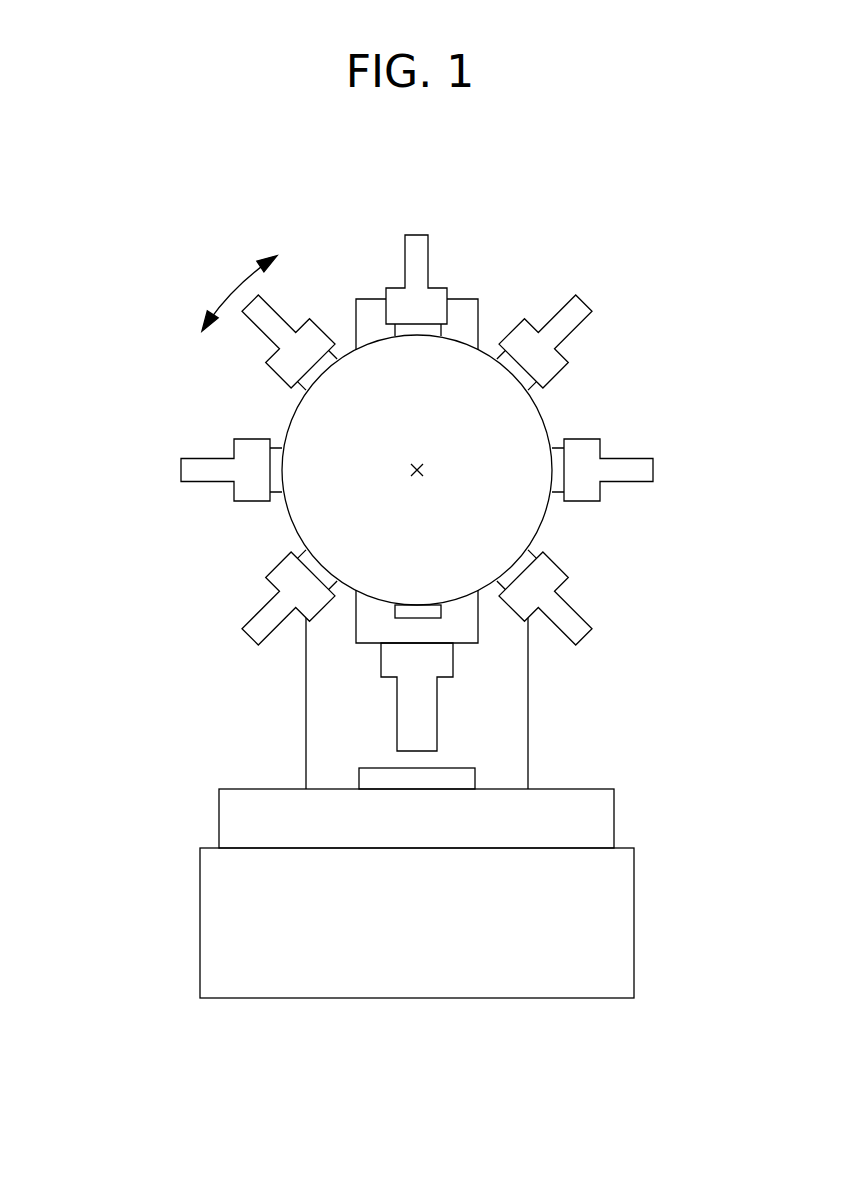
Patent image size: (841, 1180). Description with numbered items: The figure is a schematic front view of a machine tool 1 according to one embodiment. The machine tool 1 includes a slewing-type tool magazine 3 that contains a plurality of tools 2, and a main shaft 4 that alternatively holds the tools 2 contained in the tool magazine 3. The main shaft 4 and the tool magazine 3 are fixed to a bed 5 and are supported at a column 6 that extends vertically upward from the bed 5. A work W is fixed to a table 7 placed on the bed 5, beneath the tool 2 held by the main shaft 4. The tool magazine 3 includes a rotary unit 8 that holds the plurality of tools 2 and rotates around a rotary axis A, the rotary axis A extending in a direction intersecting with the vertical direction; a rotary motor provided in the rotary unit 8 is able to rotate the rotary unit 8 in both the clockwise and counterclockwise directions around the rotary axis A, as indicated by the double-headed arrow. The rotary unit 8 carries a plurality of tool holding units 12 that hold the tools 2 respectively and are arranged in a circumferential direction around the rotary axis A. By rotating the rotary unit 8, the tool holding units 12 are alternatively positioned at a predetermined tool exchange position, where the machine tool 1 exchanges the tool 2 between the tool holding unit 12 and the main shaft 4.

The machine tool 1 is at (85, 195).
The tool 2 is at (205, 458).
The tool magazine 3 is at (527, 274).
The main shaft 4 is at (478, 630).
The bed 5 is at (634, 918).
The column 6 is at (306, 727).
The table 7 is at (614, 816).
The rotary unit 8 is at (603, 393).
The tool holding unit 12 is at (278, 503).
The work W is at (460, 767).
The rotary axis A is at (426, 471).